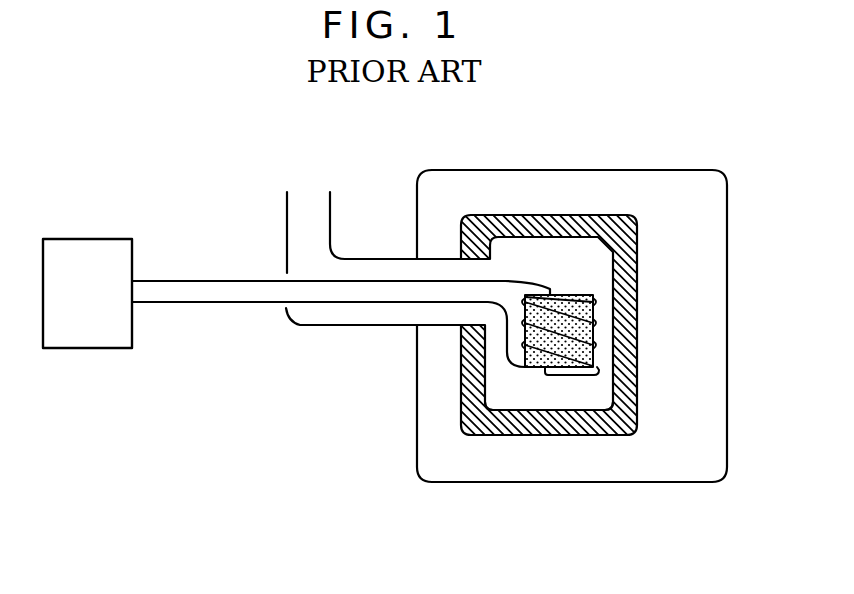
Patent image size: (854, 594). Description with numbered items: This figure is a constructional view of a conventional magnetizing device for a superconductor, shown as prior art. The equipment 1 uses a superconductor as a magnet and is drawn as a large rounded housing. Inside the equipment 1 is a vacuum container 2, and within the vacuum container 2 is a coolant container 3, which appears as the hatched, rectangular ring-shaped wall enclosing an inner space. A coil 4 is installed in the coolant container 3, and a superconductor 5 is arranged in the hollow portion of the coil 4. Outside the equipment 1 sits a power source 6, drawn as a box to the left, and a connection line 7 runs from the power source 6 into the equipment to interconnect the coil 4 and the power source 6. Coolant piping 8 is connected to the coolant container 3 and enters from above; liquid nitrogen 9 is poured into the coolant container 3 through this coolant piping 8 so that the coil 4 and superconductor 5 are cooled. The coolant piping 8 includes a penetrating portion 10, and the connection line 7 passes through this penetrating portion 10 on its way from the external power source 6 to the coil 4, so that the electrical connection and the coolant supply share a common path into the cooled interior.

The equipment 1 is at (681, 169).
The vacuum container 2 is at (616, 213).
The coolant container 3 is at (579, 215).
The coil 4 is at (550, 288).
The superconductor 5 is at (578, 370).
The power source 6 is at (108, 239).
The connection line 7 is at (195, 280).
The coolant piping 8 is at (330, 213).
The liquid nitrogen 9 is at (508, 397).
The penetrating portion 10 is at (284, 308).